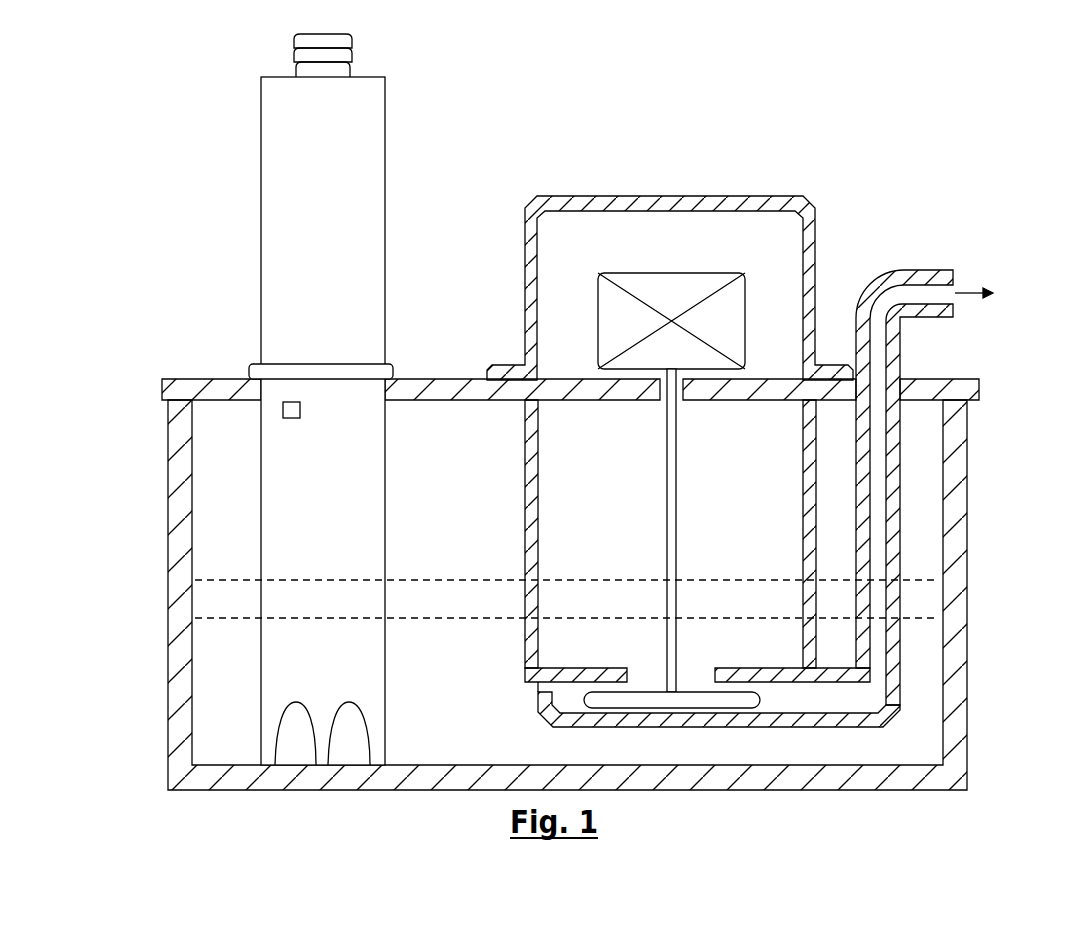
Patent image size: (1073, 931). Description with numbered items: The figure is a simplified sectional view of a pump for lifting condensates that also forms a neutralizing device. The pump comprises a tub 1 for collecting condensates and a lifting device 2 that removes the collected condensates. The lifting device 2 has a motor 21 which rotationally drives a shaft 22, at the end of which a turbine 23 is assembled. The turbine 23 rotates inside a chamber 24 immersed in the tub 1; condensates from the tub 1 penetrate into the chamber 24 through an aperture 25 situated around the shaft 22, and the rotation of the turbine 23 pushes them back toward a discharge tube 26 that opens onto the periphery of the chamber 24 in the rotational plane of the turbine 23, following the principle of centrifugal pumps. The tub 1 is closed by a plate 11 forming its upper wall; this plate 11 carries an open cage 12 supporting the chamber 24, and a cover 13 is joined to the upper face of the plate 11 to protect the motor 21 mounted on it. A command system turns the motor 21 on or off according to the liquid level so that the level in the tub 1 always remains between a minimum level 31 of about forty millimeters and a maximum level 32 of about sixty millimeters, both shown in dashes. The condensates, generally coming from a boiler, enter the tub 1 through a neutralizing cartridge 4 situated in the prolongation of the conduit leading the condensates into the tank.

The tub 1 is at (178, 665).
The lifting device 2 is at (669, 491).
The neutralizing cartridge 4 is at (293, 285).
The plate 11 is at (165, 386).
The open cage 12 is at (530, 445).
The cover 13 is at (545, 203).
The motor 21 is at (656, 292).
The shaft 22 is at (668, 465).
The turbine 23 is at (702, 700).
The chamber 24 is at (570, 700).
The aperture 25 is at (651, 678).
The discharge tube 26 is at (820, 697).
The minimum level 31 is at (935, 617).
The maximum level 32 is at (935, 578).